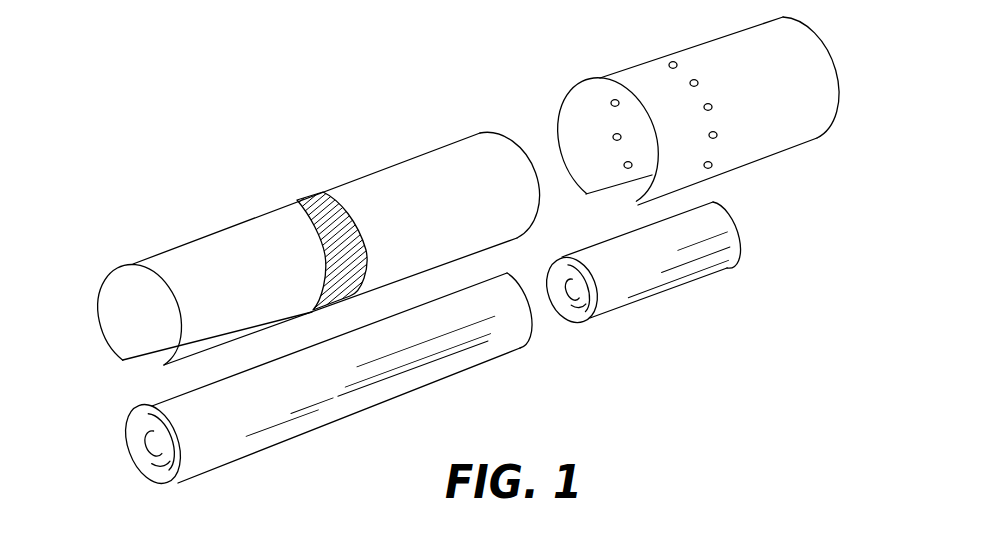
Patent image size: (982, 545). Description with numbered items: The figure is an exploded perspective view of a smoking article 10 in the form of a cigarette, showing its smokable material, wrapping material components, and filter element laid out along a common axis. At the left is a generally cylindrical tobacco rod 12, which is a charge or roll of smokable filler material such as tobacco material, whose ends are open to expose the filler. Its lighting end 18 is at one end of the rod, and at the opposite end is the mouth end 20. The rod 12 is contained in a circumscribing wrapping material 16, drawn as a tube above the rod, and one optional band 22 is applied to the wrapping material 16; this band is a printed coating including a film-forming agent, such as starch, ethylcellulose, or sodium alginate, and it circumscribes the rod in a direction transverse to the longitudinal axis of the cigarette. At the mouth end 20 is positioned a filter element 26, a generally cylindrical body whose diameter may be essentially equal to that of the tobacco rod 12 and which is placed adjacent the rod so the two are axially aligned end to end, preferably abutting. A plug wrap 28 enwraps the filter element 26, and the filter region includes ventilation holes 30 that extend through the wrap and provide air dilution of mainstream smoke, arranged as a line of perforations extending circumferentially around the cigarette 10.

The smoking article 10 is at (375, 158).
The tobacco rod 12 is at (263, 430).
The wrapping material 16 is at (475, 152).
The lighting end 18 is at (120, 453).
The mouth end 20 is at (745, 215).
The band 22 is at (298, 200).
The filter element 26 is at (640, 287).
The plug wrap 28 is at (728, 60).
The ventilation holes 30 is at (717, 138).